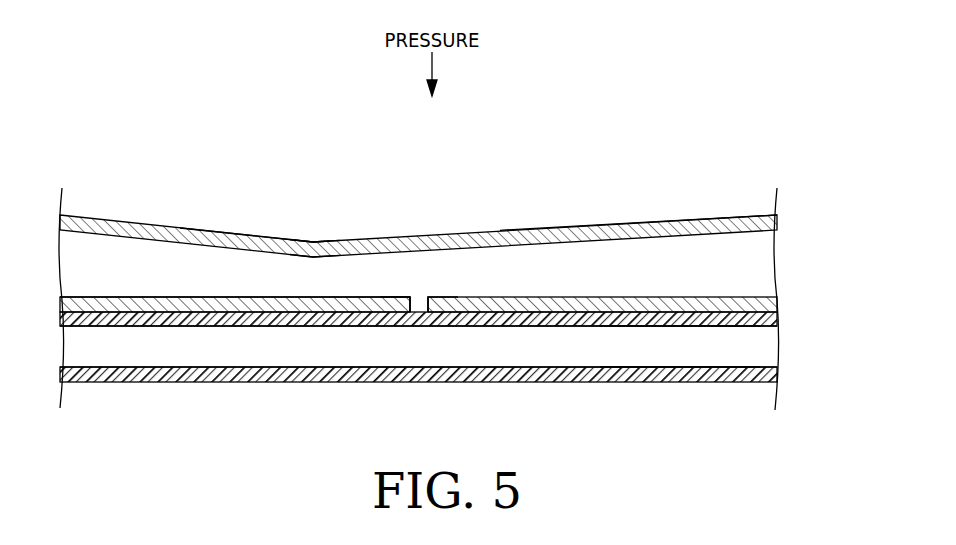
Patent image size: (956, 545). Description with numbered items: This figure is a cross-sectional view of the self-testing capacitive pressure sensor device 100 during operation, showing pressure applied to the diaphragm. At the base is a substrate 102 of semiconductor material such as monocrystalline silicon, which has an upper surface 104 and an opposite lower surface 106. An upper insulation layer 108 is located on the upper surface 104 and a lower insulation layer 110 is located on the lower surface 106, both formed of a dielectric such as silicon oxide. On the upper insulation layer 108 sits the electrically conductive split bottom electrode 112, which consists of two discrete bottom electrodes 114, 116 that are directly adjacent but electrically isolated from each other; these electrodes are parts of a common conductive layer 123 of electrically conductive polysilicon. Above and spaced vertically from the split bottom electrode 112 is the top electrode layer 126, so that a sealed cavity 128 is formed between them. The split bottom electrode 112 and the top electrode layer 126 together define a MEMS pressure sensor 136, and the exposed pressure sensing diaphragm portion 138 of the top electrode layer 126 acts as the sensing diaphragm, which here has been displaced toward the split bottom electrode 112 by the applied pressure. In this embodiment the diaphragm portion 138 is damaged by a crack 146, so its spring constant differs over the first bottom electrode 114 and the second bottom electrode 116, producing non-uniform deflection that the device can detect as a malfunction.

The self-testing capacitive pressure sensor device 100 is at (159, 427).
The substrate 102 is at (696, 357).
The upper surface 104 is at (630, 327).
The lower surface 106 is at (712, 367).
The upper insulation layer 108 is at (142, 320).
The lower insulation layer 110 is at (165, 375).
The split bottom electrode 112 is at (378, 147).
The first bottom electrode 114 is at (383, 297).
The second bottom electrode 116 is at (452, 297).
The common conductive layer 123 is at (786, 306).
The top electrode layer 126 is at (152, 224).
The sealed cavity 128 is at (130, 277).
The MEMS pressure sensor 136 is at (574, 198).
The pressure sensing diaphragm portion 138 is at (222, 238).
The crack 146 is at (314, 242).